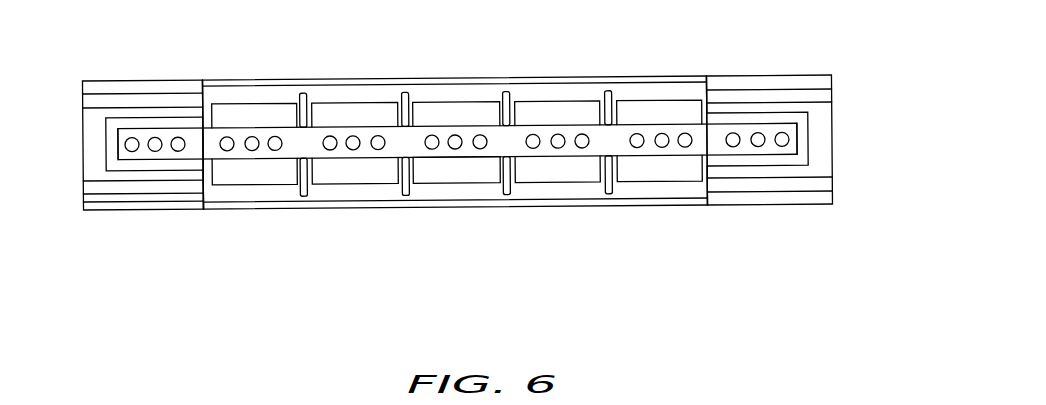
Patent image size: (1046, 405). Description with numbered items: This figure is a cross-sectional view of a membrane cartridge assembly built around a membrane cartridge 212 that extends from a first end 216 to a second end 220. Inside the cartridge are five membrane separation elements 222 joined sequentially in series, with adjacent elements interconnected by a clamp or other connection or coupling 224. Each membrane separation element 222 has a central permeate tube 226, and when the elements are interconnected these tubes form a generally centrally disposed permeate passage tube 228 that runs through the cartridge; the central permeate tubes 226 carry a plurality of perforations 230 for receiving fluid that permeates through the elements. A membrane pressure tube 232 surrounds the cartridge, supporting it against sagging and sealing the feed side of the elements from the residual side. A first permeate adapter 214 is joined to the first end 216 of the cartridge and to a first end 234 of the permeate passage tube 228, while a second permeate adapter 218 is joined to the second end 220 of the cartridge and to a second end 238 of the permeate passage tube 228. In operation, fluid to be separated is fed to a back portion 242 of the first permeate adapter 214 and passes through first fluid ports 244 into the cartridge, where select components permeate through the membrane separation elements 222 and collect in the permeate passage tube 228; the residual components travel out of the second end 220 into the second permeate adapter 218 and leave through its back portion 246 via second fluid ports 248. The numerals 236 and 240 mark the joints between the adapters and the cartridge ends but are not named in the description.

The membrane cartridge 212 is at (279, 57).
The first permeate adapter 214 is at (141, 80).
The first end of the membrane cartridge 216 is at (201, 42).
The second permeate adapter 218 is at (768, 72).
The second end of the membrane cartridge 220 is at (652, 45).
The membrane separation element 222 is at (350, 172).
The connection or coupling 224 is at (406, 190).
The central permeate tube 226 is at (367, 132).
The permeate passage tube 228 is at (470, 175).
The perforation 230 is at (558, 150).
The membrane pressure tube 232 is at (540, 78).
The first end of the permeate passage tube 234 is at (123, 158).
The left joint line 236 is at (202, 203).
The second end of the permeate passage tube 238 is at (790, 153).
The right joint line 240 is at (708, 177).
The back portion of the first permeate adapter 242 is at (83, 143).
The first fluid ports 244 is at (90, 103).
The back portion of the second permeate adapter 246 is at (833, 138).
The second fluid ports 248 is at (827, 94).